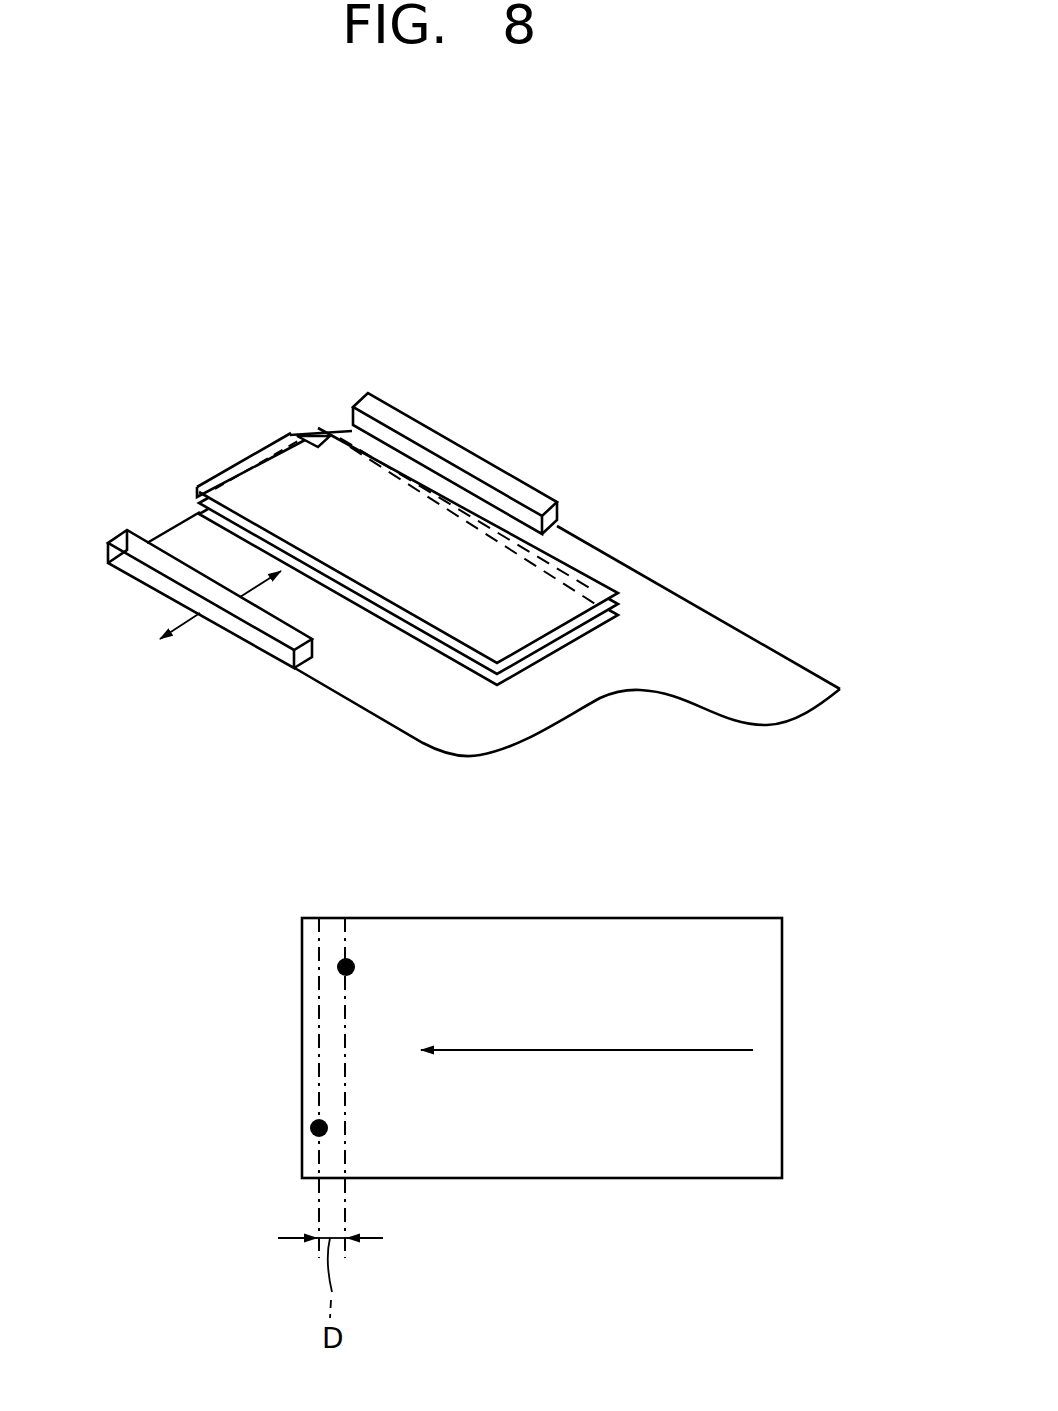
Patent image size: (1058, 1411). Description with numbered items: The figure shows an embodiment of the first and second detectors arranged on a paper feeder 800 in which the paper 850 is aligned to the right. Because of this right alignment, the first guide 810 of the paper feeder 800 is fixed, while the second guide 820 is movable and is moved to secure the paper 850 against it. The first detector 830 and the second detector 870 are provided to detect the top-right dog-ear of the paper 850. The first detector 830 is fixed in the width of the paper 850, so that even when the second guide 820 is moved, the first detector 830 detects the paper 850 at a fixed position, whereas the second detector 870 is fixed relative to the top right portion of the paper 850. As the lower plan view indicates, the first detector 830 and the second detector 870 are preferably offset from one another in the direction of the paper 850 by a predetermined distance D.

The paper feeder 800 is at (770, 316).
The first guide 810 is at (528, 496).
The second guide 820 is at (300, 655).
The first detector 830 is at (208, 479).
The paper 850 is at (587, 586).
The second detector 870 is at (317, 426).